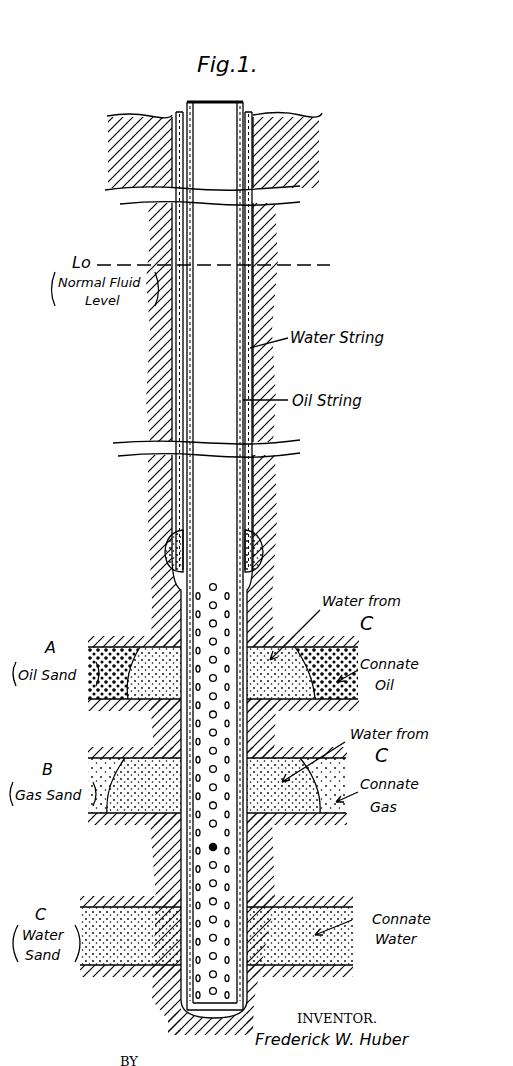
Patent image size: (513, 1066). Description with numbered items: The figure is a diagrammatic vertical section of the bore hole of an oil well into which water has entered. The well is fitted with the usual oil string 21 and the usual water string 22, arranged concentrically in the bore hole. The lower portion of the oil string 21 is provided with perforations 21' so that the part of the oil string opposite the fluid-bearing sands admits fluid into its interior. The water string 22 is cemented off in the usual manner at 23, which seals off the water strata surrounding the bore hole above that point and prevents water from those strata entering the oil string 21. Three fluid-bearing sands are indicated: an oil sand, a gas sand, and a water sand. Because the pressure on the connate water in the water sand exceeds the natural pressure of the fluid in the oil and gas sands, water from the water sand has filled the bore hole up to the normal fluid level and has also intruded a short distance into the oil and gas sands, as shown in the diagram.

The oil string 21 is at (242, 556).
The water string 22 is at (252, 482).
The cementing of the water string 23 is at (166, 543).
The perforations 21' is at (249, 791).